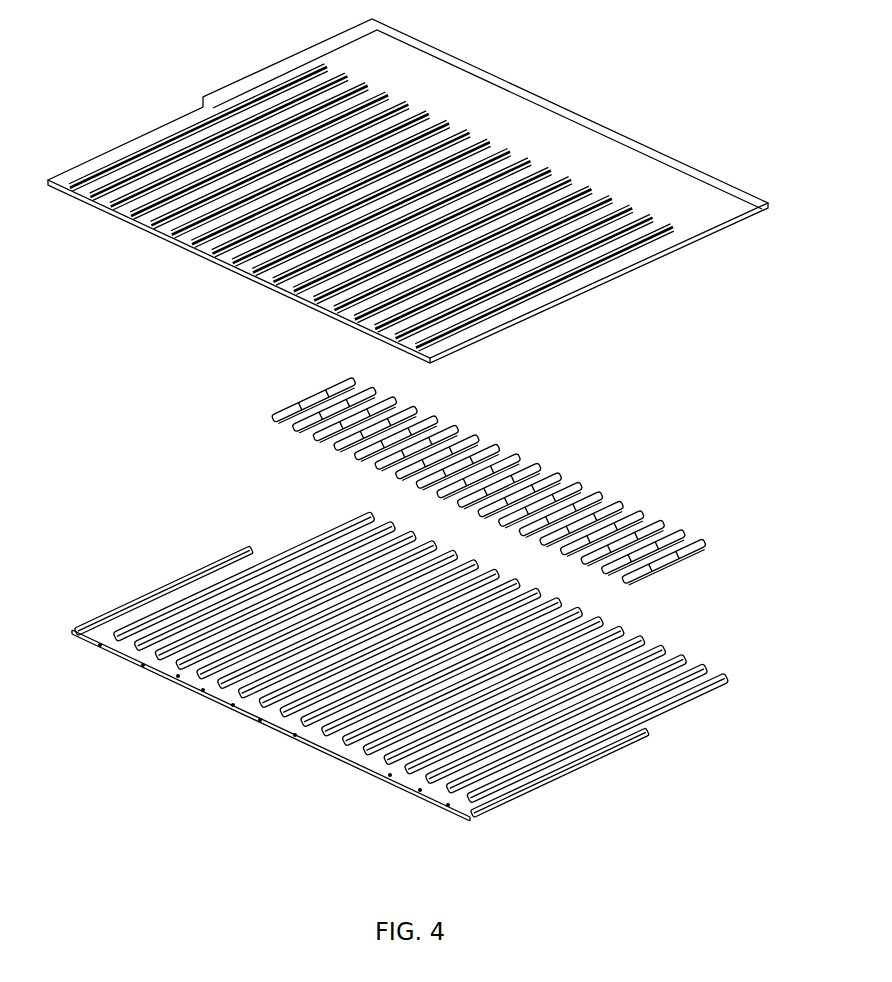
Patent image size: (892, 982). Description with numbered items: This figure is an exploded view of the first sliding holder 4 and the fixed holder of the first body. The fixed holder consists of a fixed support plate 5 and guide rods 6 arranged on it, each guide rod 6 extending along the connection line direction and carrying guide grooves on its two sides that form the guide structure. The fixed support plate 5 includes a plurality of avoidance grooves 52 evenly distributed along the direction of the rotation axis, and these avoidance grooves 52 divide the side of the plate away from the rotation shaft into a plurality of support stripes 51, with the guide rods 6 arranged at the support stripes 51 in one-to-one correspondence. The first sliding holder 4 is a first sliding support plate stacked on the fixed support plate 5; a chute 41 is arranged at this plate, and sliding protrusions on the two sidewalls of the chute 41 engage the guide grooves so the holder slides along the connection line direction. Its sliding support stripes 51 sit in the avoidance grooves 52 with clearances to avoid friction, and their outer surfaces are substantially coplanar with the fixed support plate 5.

The first sliding holder 4 is at (686, 198).
The chute 41 is at (533, 290).
The fixed support plate 5 is at (357, 758).
The support stripes 51 is at (598, 735).
The avoidance grooves 52 is at (667, 697).
The guide rod 6 is at (680, 557).